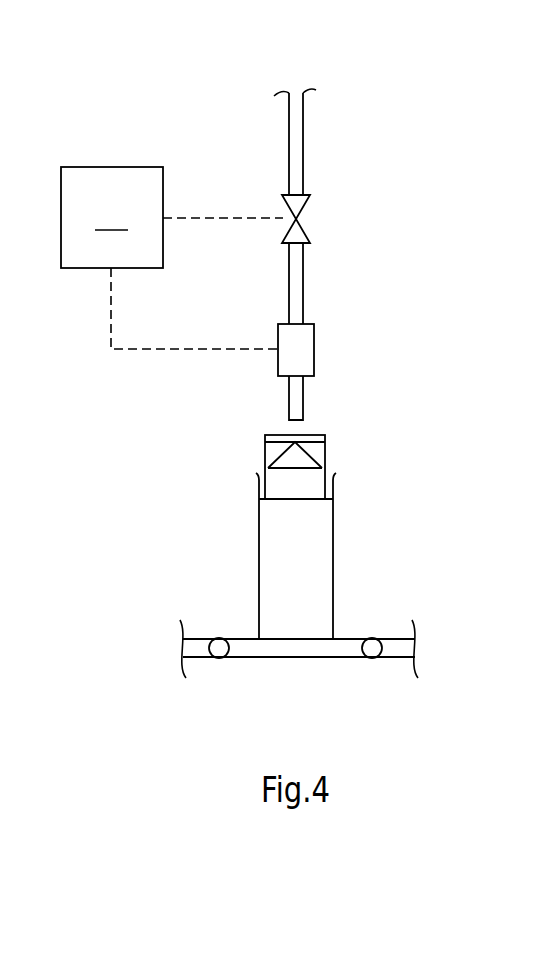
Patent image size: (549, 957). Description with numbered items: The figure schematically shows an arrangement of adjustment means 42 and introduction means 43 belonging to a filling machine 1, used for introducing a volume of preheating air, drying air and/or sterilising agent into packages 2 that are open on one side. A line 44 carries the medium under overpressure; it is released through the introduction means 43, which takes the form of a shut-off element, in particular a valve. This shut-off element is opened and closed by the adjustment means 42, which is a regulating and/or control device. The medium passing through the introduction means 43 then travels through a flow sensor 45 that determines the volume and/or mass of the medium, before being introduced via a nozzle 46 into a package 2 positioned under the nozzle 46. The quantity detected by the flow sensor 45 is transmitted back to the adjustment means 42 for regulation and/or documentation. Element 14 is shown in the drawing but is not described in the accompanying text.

The filling machine 1 is at (160, 88).
The package 2 is at (326, 449).
The container on conveyor 14 is at (375, 579).
The adjustment means 42 is at (172, 258).
The introduction means 43 is at (334, 215).
The line 44 is at (304, 132).
The flow sensor 45 is at (315, 338).
The nozzle 46 is at (304, 396).